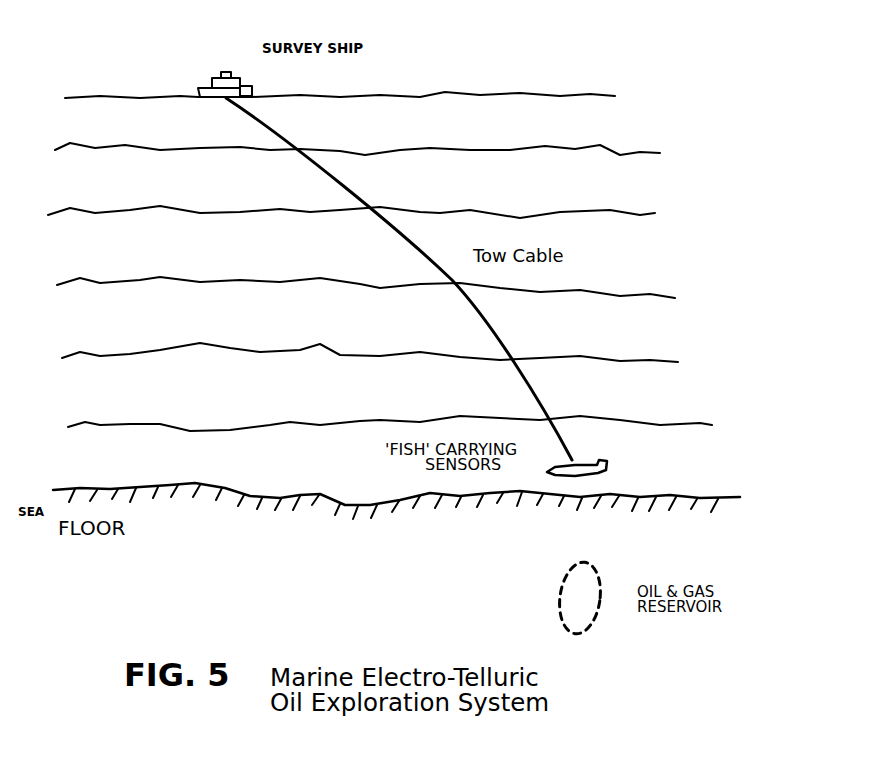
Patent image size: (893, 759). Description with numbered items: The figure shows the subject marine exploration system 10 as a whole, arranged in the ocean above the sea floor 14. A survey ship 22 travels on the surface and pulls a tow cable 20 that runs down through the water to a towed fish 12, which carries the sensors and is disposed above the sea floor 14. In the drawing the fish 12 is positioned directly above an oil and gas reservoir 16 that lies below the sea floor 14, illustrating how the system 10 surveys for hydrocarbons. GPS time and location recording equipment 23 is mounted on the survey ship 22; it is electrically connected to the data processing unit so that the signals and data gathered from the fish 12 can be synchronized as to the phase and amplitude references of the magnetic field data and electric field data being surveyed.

The marine exploration system 10 is at (651, 429).
The towed fish 12 is at (578, 468).
The sea floor 14 is at (265, 497).
The oil and gas reservoir 16 is at (578, 597).
The tow cable 20 is at (440, 263).
The survey ship 22 is at (207, 85).
The GPS time and location recording equipment 23 is at (252, 88).